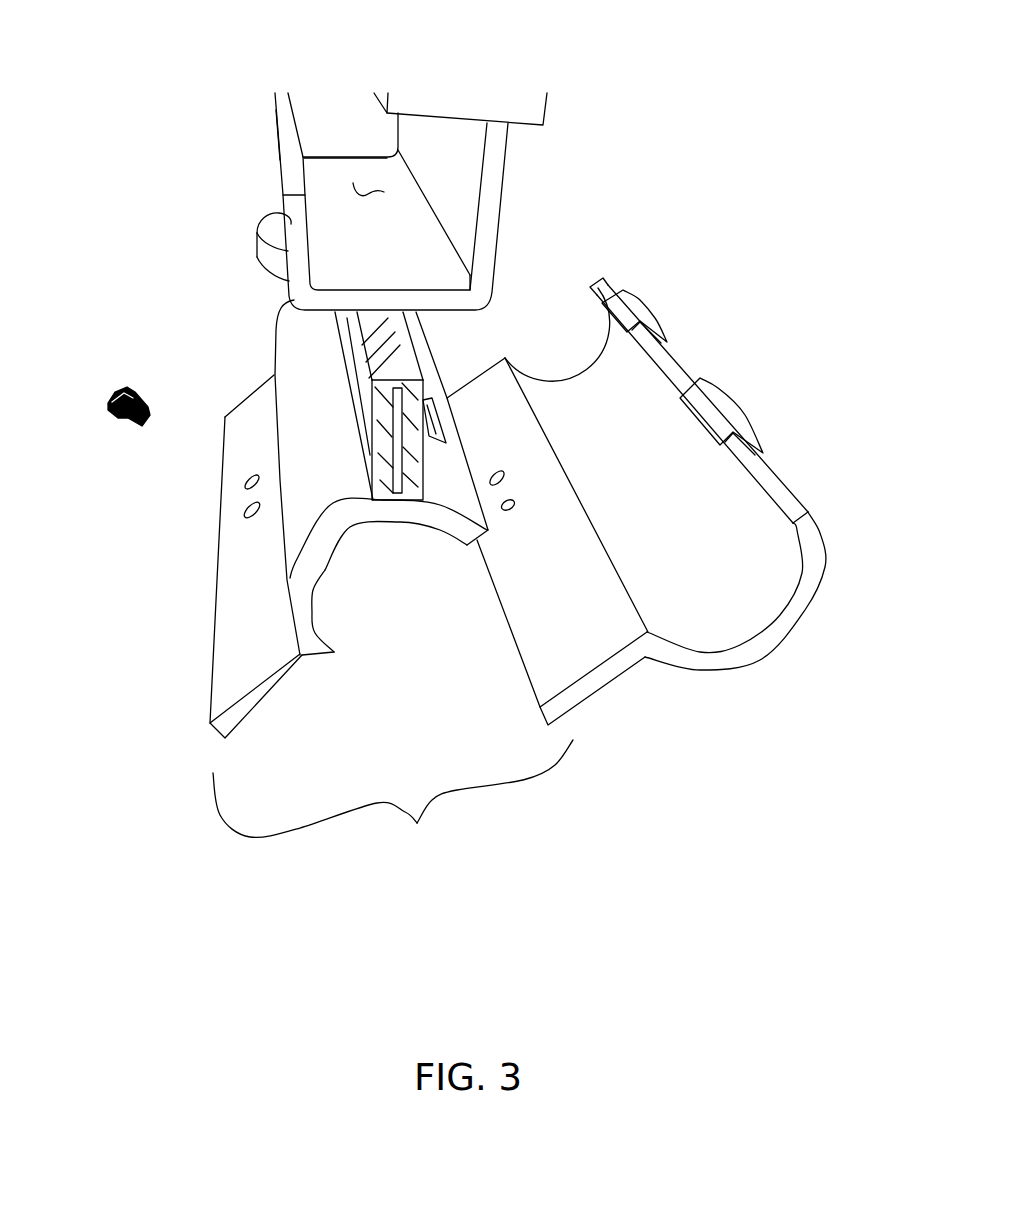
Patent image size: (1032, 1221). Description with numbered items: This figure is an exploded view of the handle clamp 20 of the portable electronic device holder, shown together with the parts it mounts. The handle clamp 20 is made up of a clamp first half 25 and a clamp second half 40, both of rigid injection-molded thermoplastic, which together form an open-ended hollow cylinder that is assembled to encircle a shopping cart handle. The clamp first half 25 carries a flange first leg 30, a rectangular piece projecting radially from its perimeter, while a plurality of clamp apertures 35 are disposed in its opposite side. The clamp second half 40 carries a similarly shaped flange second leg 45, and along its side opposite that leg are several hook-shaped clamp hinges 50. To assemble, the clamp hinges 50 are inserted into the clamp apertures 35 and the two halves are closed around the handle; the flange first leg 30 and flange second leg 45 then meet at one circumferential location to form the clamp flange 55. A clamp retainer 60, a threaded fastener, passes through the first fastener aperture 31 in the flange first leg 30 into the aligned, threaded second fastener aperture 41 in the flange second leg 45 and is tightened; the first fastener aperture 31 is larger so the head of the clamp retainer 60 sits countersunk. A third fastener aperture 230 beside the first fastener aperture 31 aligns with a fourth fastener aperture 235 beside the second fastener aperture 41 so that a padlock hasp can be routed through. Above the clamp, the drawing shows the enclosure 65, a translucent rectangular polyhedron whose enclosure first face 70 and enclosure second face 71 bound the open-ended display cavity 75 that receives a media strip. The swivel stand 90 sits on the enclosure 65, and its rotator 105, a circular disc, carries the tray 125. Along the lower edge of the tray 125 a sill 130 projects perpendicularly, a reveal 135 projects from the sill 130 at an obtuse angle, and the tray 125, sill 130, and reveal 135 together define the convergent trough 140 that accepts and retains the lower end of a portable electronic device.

The handle clamp 20 is at (216, 375).
The clamp first half 25 is at (282, 315).
The flange first leg 30 is at (233, 647).
The first fastener aperture 31 is at (240, 518).
The clamp aperture 35 is at (432, 420).
The clamp second half 40 is at (790, 620).
The second fastener aperture 41 is at (508, 515).
The flange second leg 45 is at (588, 700).
The clamp hinge 50 is at (628, 303).
The clamp flange 55 is at (393, 796).
The clamp retainer 60 is at (126, 422).
The enclosure 65 is at (504, 322).
The enclosure first face 70 is at (363, 372).
The enclosure second face 71 is at (420, 456).
The display cavity 75 is at (388, 402).
The swivel stand 90 is at (208, 202).
The rotator 105 is at (262, 248).
The tray 125 is at (452, 160).
The sill 130 is at (327, 160).
The reveal 135 is at (274, 148).
The trough 140 is at (358, 178).
The third fastener aperture 230 is at (243, 484).
The fourth fastener aperture 235 is at (490, 487).